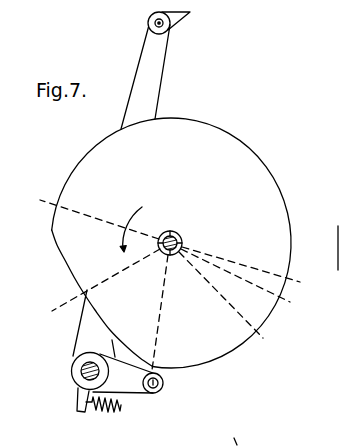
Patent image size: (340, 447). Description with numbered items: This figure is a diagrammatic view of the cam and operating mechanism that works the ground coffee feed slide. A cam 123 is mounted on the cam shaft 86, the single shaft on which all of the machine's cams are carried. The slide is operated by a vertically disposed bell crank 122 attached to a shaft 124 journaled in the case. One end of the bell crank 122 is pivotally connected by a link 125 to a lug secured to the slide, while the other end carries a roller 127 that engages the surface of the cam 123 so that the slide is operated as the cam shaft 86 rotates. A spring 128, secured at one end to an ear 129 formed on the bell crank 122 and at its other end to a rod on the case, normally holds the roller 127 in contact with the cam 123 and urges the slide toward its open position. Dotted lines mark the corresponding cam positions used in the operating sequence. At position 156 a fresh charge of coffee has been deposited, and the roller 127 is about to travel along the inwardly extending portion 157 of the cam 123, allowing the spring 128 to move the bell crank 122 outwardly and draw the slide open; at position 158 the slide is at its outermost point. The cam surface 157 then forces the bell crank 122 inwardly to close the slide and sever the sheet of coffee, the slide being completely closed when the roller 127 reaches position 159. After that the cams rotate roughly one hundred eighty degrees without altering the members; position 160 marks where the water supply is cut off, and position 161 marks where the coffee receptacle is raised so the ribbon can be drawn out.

The cam shaft 86 is at (175, 231).
The bell crank 122 is at (152, 78).
The cam 123 is at (236, 149).
The shaft 124 is at (77, 375).
The link 125 is at (184, 20).
The roller 127 is at (164, 387).
The spring 128 is at (106, 414).
The ear 129 is at (77, 406).
The position 156 is at (158, 330).
The inwardly extending portion of cam 157 is at (70, 267).
The position 158 is at (102, 283).
The position 159 is at (90, 217).
The position 160 is at (230, 262).
The position 161 is at (284, 303).